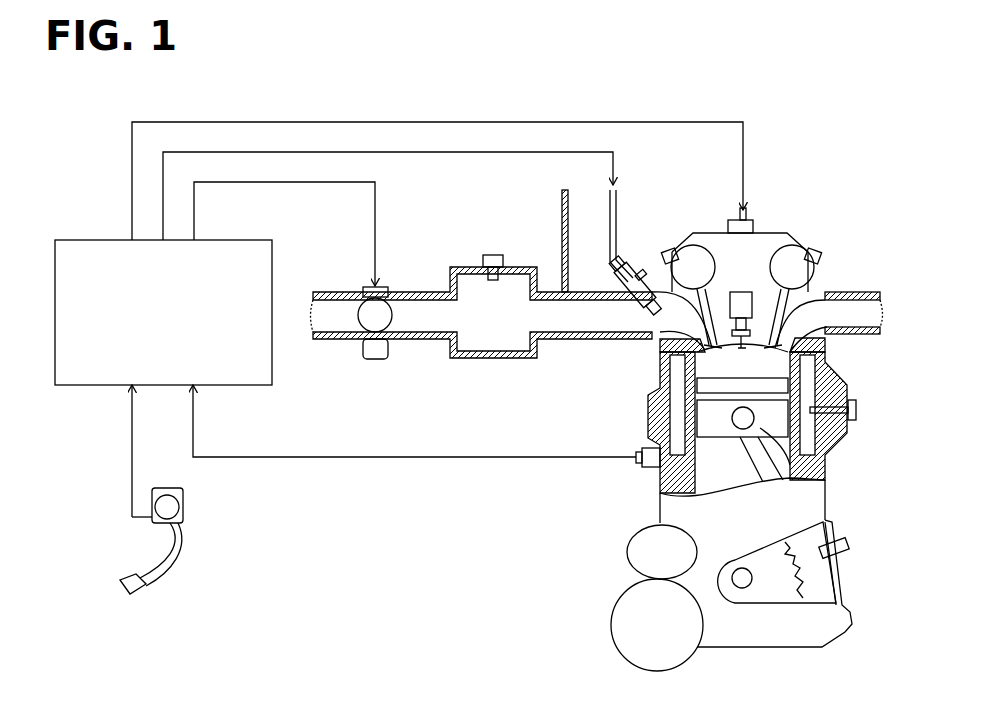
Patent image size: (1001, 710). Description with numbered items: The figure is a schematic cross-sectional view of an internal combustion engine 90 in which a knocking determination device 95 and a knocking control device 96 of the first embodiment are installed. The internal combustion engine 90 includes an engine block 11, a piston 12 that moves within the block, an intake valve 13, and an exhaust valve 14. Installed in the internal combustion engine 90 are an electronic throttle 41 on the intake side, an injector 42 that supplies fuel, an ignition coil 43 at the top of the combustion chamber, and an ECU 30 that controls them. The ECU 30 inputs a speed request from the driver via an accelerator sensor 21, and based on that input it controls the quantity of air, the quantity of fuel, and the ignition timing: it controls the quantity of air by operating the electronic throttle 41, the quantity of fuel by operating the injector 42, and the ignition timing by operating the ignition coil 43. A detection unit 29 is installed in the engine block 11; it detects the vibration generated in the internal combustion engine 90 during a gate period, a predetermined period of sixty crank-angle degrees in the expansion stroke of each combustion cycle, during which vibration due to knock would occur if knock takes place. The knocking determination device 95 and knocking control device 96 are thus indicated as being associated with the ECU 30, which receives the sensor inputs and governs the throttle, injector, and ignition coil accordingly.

The knocking control device 96 is at (99, 190).
The knocking determination device 95 is at (100, 237).
The ECU 30 is at (252, 385).
The accelerator sensor 21 is at (180, 506).
The electronic throttle 41 is at (358, 318).
The injector 42 is at (648, 280).
The ignition coil 43 is at (755, 230).
The intake valve 13 is at (660, 338).
The exhaust valve 14 is at (827, 297).
The engine block 11 is at (650, 410).
The piston 12 is at (825, 462).
The detection unit 29 is at (655, 470).
The internal combustion engine 90 is at (835, 487).